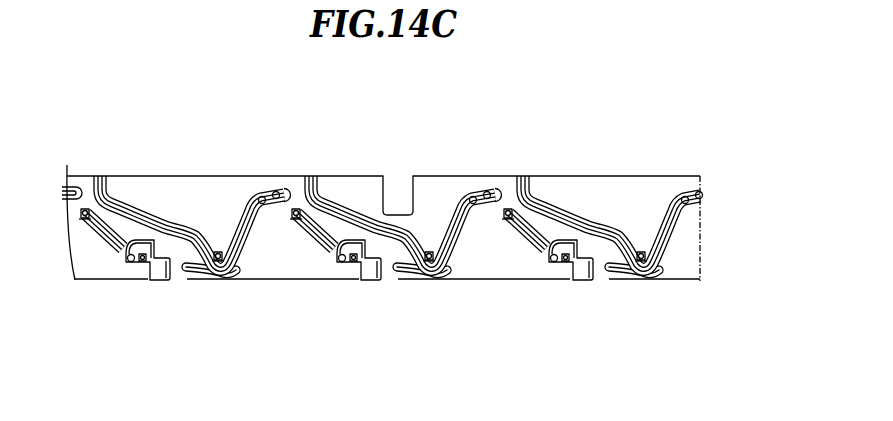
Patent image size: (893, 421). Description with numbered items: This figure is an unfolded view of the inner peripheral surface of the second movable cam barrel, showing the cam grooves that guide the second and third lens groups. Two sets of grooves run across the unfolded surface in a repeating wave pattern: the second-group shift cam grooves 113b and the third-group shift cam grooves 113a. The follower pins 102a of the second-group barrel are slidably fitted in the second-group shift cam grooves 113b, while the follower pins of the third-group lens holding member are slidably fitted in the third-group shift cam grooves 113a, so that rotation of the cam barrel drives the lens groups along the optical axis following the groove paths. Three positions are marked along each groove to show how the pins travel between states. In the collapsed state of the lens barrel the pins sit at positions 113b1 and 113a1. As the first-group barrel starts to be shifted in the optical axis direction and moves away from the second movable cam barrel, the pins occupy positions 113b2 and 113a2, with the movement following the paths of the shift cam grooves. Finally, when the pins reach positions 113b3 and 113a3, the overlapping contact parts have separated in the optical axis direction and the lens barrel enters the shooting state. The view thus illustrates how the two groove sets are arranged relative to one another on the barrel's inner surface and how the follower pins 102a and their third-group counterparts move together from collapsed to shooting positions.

The third-group shift cam groove 113a is at (244, 258).
The follower pin position in third-group shift cam groove (collapsed state) 113a1 is at (146, 264).
The follower pin position in third-group shift cam groove (intermediate state) 113a2 is at (130, 282).
The follower pin position in third-group shift cam groove (shooting state) 113a3 is at (85, 220).
The second-group shift cam groove 113b is at (163, 221).
The follower pin position in second-group shift cam groove (collapsed state) 113b1 is at (699, 191).
The follower pin position in second-group shift cam groove (intermediate state) 113b2 is at (259, 197).
The follower pin position in second-group shift cam groove (shooting state) 113b3 is at (640, 251).
The follower pin 102a is at (383, 148).